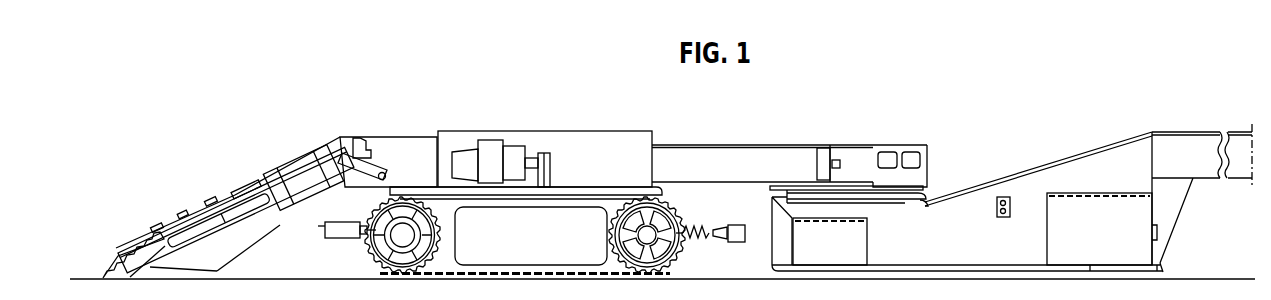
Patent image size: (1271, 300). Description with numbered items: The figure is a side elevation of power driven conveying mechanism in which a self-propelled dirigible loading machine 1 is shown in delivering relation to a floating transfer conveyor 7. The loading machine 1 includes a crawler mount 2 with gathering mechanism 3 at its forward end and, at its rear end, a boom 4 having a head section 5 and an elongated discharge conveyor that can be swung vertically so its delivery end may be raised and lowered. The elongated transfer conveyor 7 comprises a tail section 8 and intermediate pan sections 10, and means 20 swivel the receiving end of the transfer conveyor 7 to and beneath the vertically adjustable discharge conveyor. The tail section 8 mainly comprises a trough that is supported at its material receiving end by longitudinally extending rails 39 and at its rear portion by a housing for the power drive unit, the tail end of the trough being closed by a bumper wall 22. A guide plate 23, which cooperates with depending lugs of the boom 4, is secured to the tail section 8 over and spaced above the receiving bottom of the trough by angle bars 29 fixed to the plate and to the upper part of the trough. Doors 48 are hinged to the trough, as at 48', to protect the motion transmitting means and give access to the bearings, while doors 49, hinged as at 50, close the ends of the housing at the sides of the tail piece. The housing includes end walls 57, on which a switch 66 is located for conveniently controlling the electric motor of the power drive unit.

The loading machine 1 is at (521, 131).
The crawler mount 2 is at (653, 220).
The gathering mechanism 3 is at (237, 200).
The boom 4 is at (730, 152).
The head section 5 is at (876, 150).
The transfer conveyor 7 is at (1240, 140).
The tail section 8 is at (1011, 183).
The intermediate pan sections 10 is at (1245, 172).
The swiveling means 20 is at (928, 193).
The bumper wall 22 is at (774, 220).
The guide plate 23 is at (773, 197).
The angle bars 29 is at (864, 197).
The rails 39 is at (932, 266).
The doors 48 is at (850, 241).
The hinge 48' is at (796, 243).
The doors 49 is at (1057, 250).
The hinge 50 is at (1098, 197).
The end walls 57 is at (1103, 156).
The switch 66 is at (997, 208).